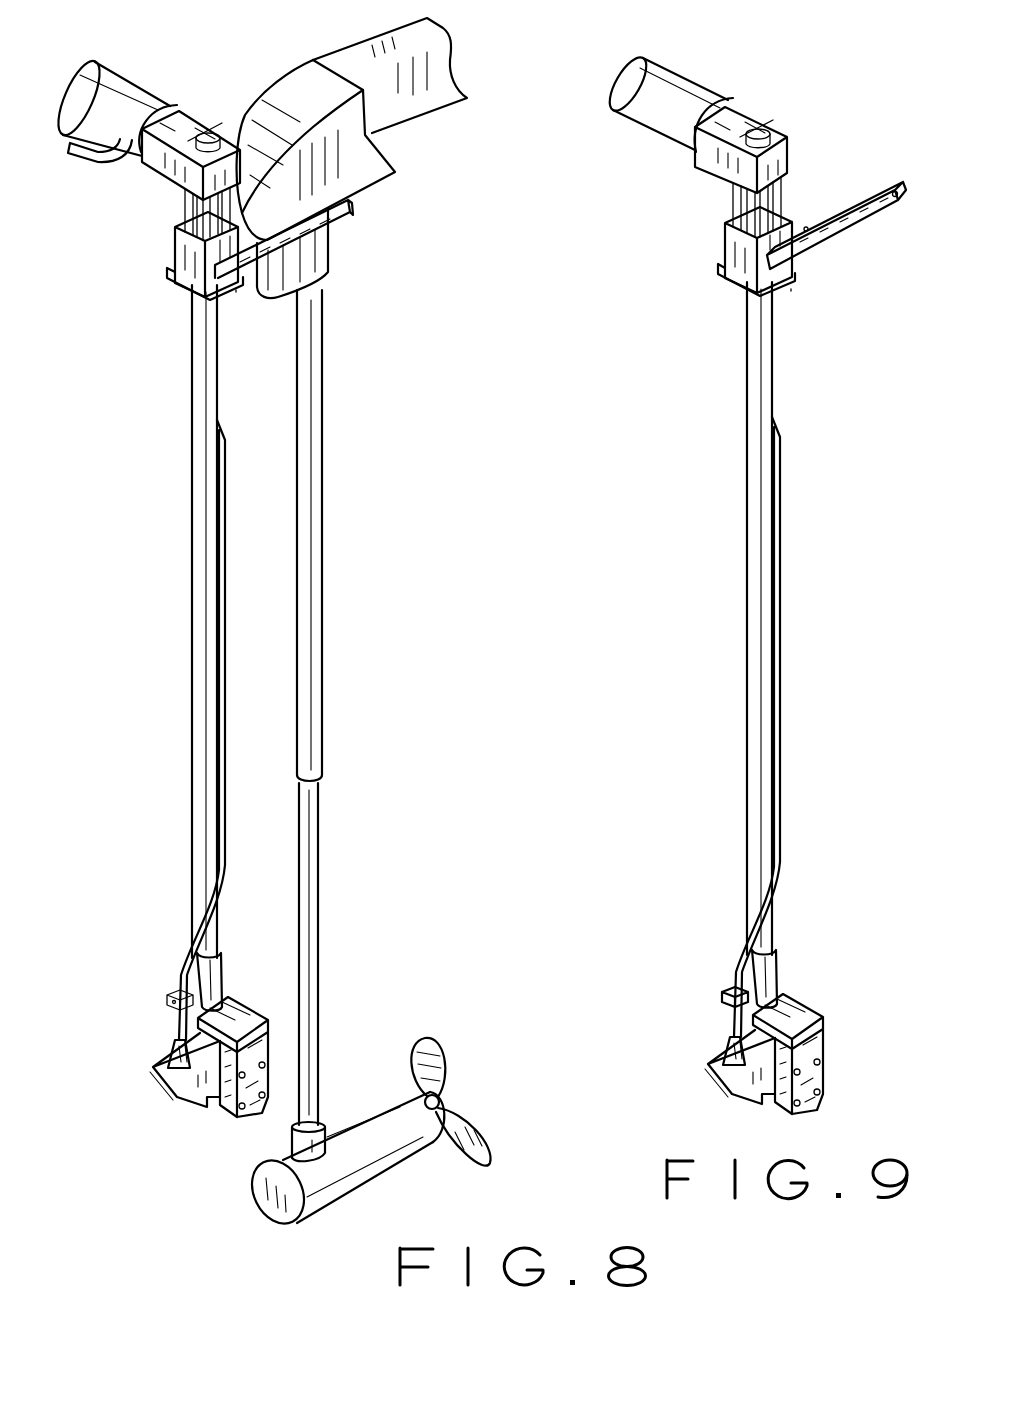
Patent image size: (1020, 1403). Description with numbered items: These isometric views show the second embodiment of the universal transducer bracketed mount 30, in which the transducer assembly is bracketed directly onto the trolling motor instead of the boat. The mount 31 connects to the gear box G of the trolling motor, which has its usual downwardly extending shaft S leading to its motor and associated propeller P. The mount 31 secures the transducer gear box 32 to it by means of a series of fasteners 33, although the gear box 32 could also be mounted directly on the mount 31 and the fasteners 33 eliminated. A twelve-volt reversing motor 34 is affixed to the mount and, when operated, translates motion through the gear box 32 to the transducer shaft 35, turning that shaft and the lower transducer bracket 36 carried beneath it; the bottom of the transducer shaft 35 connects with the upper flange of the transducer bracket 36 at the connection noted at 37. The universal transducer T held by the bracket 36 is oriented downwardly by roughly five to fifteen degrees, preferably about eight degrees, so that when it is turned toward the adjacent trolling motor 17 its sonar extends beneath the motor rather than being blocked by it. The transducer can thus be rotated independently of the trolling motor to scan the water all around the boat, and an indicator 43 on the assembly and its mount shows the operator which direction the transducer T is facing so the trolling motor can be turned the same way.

In FIG. 8, the trolling motor 17 is at (377, 1180).
In FIG. 8, the universal transducer bracketed mount 30 is at (345, 543).
In FIG. 9, the universal transducer bracketed mount 30 is at (855, 391).
In FIG. 8, the mount 31 is at (177, 278).
In FIG. 9, the mount 31 is at (723, 248).
In FIG. 8, the gear box 32 is at (148, 162).
In FIG. 9, the gear box 32 is at (788, 148).
In FIG. 8, the series of fasteners 33 is at (187, 203).
In FIG. 9, the series of fasteners 33 is at (782, 205).
In FIG. 8, the drive motor 34 is at (113, 73).
In FIG. 9, the drive motor 34 is at (680, 73).
In FIG. 8, the transducer shaft 35 is at (193, 451).
In FIG. 9, the transducer shaft 35 is at (720, 659).
In FIG. 8, the lower transducer bracket 36 is at (258, 1015).
In FIG. 9, the lower transducer bracket 36 is at (805, 1032).
In FIG. 8, the connection of transducer shaft to bracket flange 37 is at (210, 969).
In FIG. 8, the indicator 43 is at (216, 133).
In FIG. 9, the indicator 43 is at (766, 128).
In FIG. 8, the gear box of the trolling motor G is at (293, 73).
In FIG. 8, the shaft of the trolling motor S is at (322, 382).
In FIG. 8, the propeller P is at (457, 1092).
In FIG. 8, the universal transducer T is at (205, 1103).
In FIG. 9, the universal transducer T is at (722, 1071).